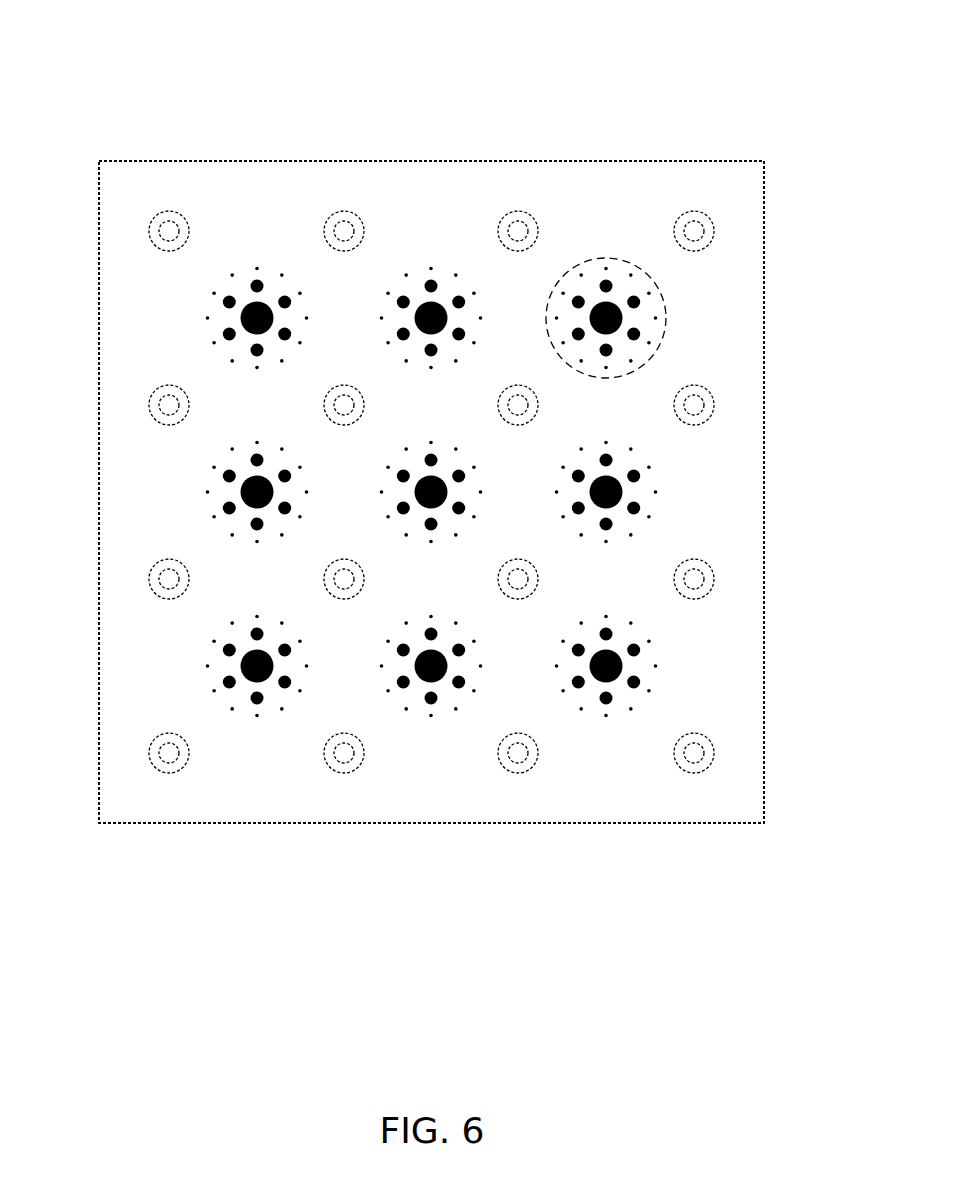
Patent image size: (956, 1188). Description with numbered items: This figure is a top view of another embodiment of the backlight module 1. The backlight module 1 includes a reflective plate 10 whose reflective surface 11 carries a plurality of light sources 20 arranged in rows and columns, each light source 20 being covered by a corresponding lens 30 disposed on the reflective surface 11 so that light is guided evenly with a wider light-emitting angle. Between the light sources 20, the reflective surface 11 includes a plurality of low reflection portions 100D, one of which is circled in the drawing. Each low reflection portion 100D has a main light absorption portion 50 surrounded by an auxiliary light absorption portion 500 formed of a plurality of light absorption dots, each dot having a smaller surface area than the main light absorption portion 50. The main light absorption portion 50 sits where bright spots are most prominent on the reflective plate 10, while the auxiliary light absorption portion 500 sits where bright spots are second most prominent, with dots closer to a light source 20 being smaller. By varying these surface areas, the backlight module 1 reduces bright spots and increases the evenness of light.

The backlight module 1 is at (119, 32).
The reflective plate 10 is at (728, 161).
The reflective surface 11 is at (748, 197).
The light source 20 is at (327, 227).
The lens 30 is at (353, 212).
The main light absorption portion 50 is at (241, 316).
The auxiliary light absorption portion 500 is at (224, 335).
The low reflection portion 100D is at (666, 308).